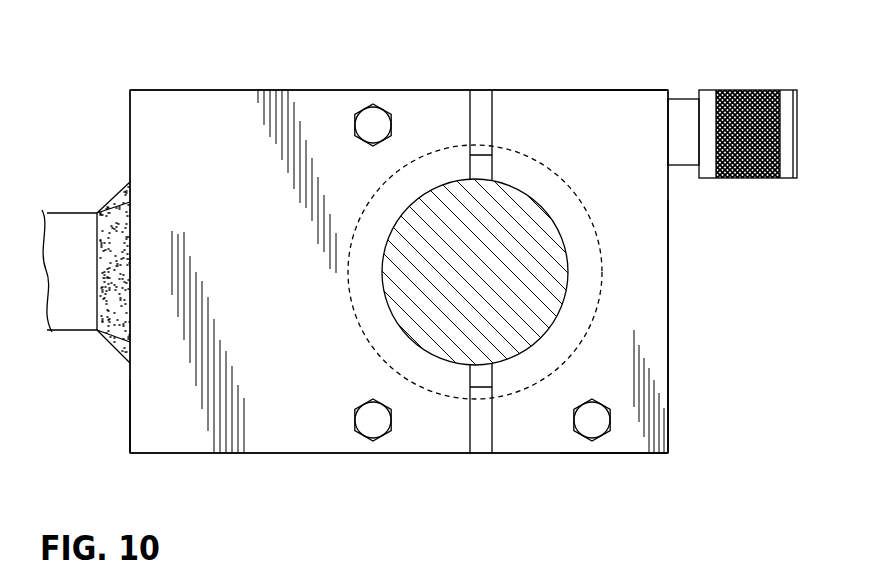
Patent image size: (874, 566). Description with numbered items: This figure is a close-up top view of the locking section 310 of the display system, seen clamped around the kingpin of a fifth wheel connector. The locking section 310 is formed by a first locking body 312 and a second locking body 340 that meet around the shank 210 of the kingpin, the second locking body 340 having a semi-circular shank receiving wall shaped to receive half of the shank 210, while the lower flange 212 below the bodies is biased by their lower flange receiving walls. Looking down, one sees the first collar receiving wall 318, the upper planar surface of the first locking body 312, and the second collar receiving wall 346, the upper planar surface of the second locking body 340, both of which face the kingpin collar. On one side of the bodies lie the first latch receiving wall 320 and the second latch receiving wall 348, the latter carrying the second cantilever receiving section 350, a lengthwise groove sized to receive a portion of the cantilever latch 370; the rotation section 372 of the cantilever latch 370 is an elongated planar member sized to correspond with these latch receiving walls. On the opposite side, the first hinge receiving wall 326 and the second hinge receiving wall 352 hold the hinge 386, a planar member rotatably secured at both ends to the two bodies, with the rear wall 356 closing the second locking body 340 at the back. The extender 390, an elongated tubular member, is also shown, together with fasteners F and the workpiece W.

The locking section 310 is at (253, 108).
The first locking body 312 is at (248, 213).
The first collar receiving wall 318 is at (129, 410).
The first latch receiving wall 320 is at (170, 90).
The first hinge receiving wall 326 is at (233, 453).
The second locking body 340 is at (635, 161).
The second collar receiving wall 346 is at (650, 280).
The second latch receiving wall 348 is at (581, 90).
The second cantilever receiving section 350 is at (129, 118).
The second hinge receiving wall 352 is at (645, 454).
The rear wall 356 is at (668, 360).
The cantilever latch 370 is at (772, 89).
The rotation section 372 is at (482, 100).
The hinge 386 is at (482, 447).
The extender 390 is at (70, 224).
The shank 210 is at (493, 285).
The lower flange 212 is at (357, 322).
The fasteners F is at (367, 113).
The workpiece W is at (103, 292).